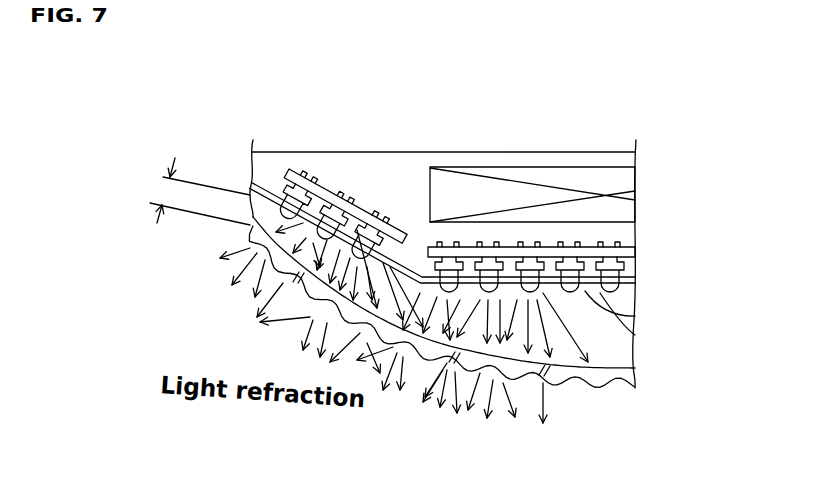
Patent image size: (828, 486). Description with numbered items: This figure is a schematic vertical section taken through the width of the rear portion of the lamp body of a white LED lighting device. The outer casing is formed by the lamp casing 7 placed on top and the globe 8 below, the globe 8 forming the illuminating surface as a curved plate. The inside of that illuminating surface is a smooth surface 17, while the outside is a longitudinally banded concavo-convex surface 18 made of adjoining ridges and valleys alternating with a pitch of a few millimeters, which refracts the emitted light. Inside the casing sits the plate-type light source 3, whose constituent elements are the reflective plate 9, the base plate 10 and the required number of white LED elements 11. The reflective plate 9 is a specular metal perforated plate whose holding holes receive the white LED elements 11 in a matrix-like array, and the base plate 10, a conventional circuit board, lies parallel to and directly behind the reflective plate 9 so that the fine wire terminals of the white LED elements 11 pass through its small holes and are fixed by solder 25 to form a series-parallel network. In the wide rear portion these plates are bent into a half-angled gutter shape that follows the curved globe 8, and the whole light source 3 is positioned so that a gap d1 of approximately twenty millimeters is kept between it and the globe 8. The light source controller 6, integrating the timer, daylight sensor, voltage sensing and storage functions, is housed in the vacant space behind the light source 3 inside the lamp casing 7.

The light source 3 is at (363, 197).
The light source controller 6 is at (430, 195).
The lamp casing 7 is at (483, 148).
The globe 8 is at (258, 300).
The reflective plate 9 is at (272, 187).
The base plate 10 is at (330, 190).
The white LED element 11 is at (635, 336).
The smooth surface 17 is at (615, 362).
The concavo-convex surface 18 is at (548, 383).
The solder 25 is at (307, 175).
The gap d1 is at (200, 191).